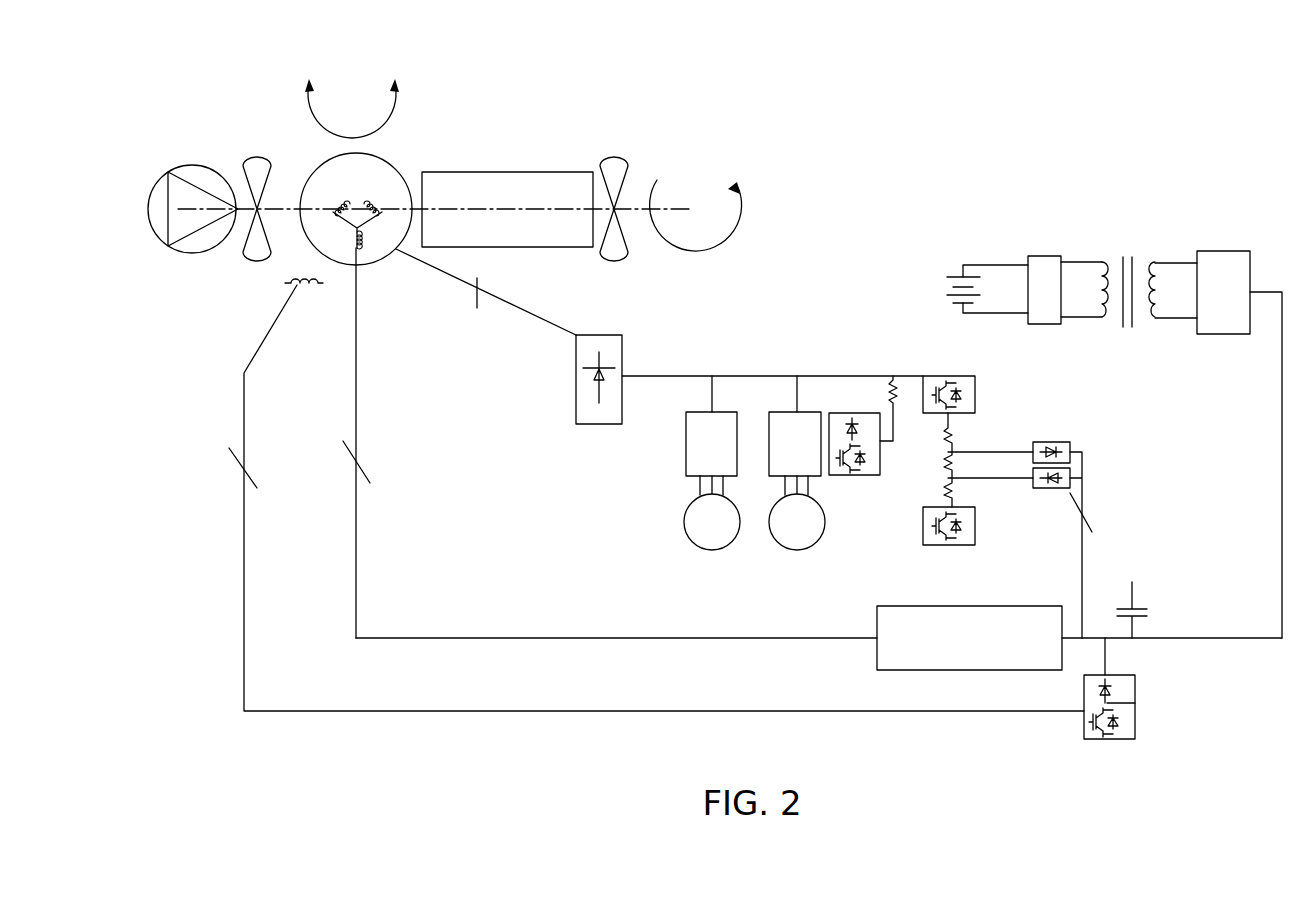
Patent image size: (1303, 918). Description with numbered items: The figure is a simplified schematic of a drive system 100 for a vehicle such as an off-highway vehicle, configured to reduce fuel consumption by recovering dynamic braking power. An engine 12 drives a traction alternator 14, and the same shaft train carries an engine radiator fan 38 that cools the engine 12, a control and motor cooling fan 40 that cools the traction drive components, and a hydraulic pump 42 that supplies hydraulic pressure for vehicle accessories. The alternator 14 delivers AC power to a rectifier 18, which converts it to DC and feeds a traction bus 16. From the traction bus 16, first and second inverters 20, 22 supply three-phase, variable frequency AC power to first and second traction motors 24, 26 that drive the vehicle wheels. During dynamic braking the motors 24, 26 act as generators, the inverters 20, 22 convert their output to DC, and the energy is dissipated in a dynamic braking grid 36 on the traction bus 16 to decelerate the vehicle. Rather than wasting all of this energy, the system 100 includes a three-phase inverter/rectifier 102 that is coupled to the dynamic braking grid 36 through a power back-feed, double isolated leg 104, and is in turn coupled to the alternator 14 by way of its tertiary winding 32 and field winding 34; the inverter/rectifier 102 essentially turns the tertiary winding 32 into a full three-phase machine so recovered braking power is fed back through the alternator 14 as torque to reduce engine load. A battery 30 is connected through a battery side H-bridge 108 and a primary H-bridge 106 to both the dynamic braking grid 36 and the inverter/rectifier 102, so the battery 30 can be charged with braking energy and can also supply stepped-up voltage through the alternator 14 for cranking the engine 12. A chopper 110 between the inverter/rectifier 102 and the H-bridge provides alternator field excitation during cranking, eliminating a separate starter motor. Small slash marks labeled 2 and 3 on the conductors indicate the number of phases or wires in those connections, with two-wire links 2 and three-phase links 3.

The drive system 100 is at (749, 66).
The hydraulic pump 42 is at (150, 207).
The control and motor cooling fan 40 is at (245, 165).
The traction alternator 14 is at (311, 172).
The engine 12 is at (549, 172).
The engine radiator fan 38 is at (612, 157).
The rectifier 18 is at (620, 335).
The traction bus 16 is at (697, 340).
The first inverter 20 is at (722, 412).
The second inverter 22 is at (807, 412).
The first traction motor 24 is at (712, 550).
The second traction motor 26 is at (797, 550).
The dynamic braking grid 36 is at (866, 390).
The battery 30 is at (955, 256).
The battery side H-bridge 108 is at (1079, 240).
The primary H-bridge 106 is at (1181, 235).
The power back-feed, double isolated leg 104 is at (985, 428).
The three-phase inverter/rectifier 102 is at (1000, 606).
The chopper 110 is at (1135, 686).
The tertiary winding 32 is at (384, 372).
The field winding 34 is at (226, 411).
The number of conductors 2 is at (660, 491).
The number of conductors 3 is at (410, 388).